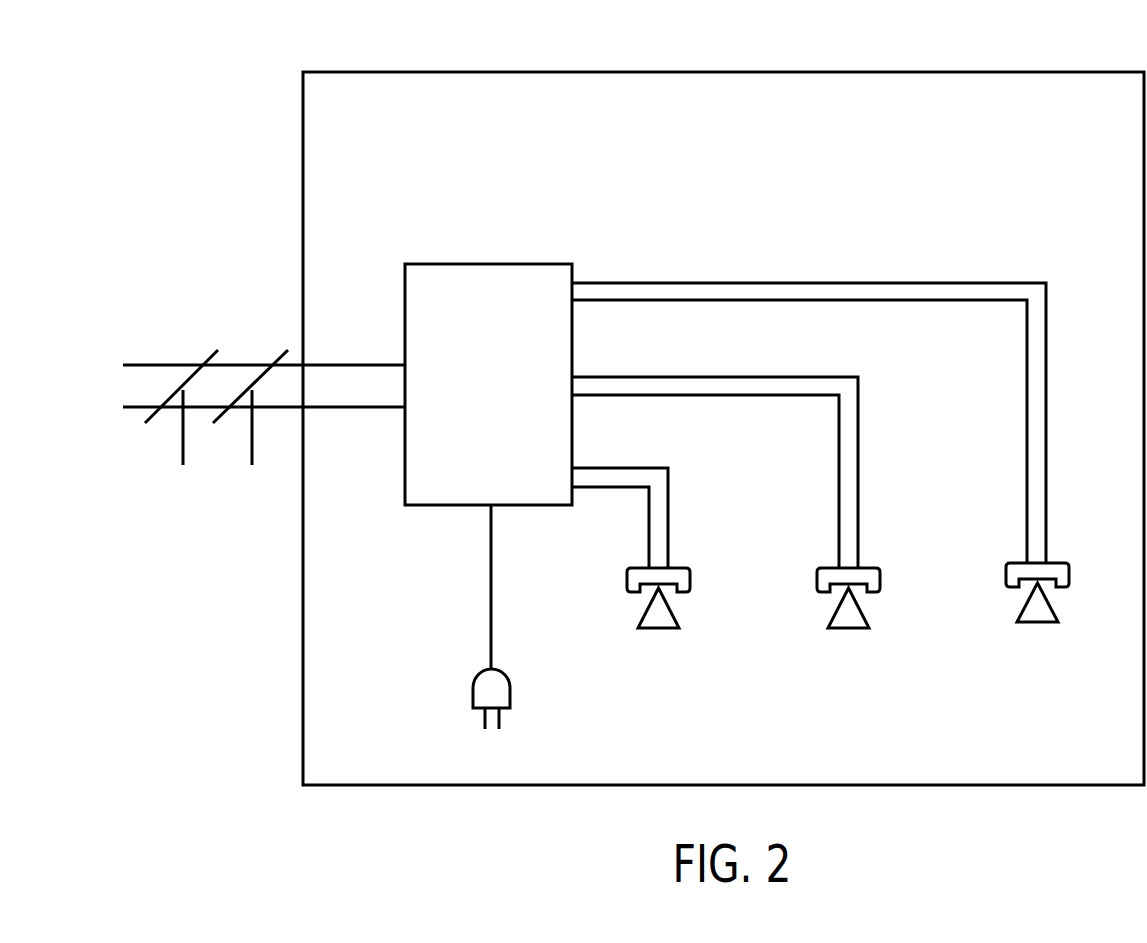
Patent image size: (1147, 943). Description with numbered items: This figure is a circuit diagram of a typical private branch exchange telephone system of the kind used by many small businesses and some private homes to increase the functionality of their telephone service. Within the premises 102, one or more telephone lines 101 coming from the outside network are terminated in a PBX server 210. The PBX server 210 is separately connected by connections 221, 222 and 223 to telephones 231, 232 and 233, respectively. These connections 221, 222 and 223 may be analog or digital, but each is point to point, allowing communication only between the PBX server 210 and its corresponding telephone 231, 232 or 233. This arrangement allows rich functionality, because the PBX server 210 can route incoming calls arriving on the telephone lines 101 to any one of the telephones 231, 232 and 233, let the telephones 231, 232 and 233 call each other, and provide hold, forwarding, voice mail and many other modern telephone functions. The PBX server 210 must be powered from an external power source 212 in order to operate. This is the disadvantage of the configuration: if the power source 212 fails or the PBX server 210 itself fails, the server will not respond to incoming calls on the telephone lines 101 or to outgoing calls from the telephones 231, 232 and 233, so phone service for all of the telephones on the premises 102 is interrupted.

The telephone lines 101 is at (150, 365).
The premises 102 is at (880, 72).
The PBX server 210 is at (510, 264).
The power source 212 is at (473, 690).
The connection 221 is at (627, 468).
The connection 222 is at (785, 377).
The connection 223 is at (1003, 283).
The telephone 231 is at (658, 628).
The telephone 232 is at (848, 628).
The telephone 233 is at (1037, 622).